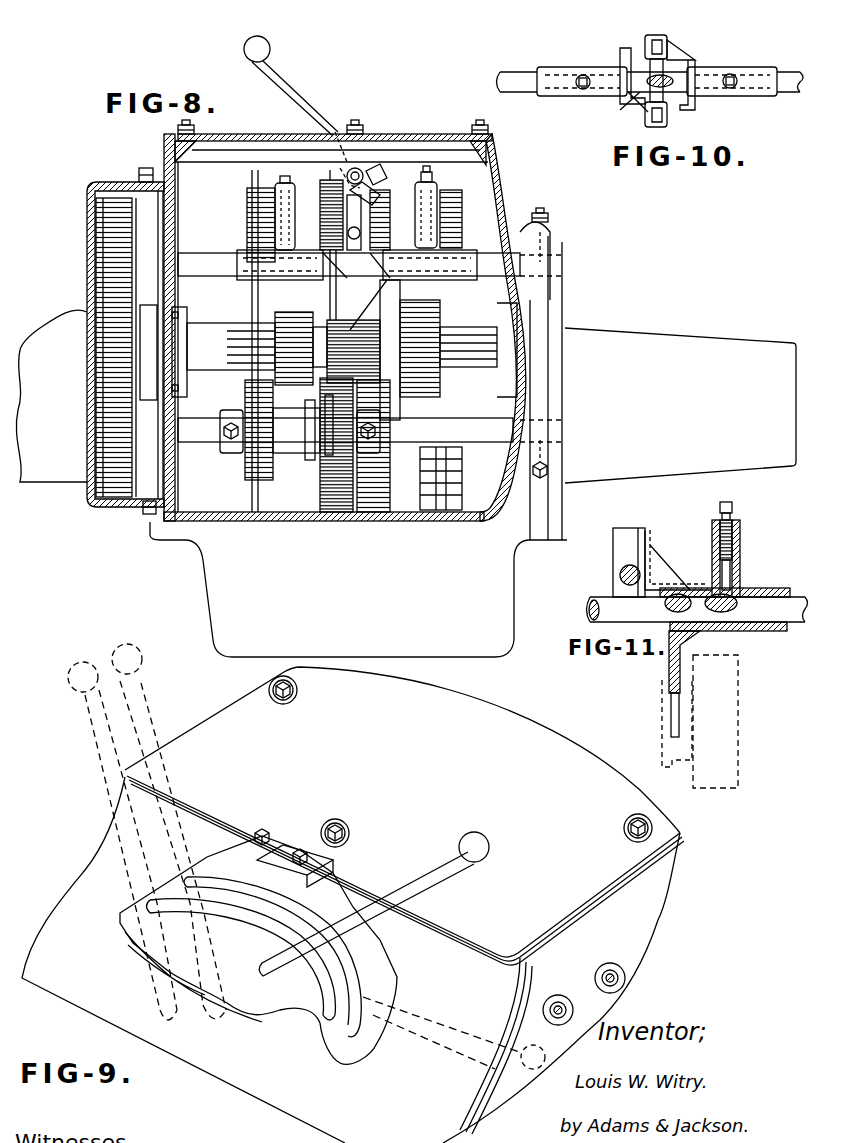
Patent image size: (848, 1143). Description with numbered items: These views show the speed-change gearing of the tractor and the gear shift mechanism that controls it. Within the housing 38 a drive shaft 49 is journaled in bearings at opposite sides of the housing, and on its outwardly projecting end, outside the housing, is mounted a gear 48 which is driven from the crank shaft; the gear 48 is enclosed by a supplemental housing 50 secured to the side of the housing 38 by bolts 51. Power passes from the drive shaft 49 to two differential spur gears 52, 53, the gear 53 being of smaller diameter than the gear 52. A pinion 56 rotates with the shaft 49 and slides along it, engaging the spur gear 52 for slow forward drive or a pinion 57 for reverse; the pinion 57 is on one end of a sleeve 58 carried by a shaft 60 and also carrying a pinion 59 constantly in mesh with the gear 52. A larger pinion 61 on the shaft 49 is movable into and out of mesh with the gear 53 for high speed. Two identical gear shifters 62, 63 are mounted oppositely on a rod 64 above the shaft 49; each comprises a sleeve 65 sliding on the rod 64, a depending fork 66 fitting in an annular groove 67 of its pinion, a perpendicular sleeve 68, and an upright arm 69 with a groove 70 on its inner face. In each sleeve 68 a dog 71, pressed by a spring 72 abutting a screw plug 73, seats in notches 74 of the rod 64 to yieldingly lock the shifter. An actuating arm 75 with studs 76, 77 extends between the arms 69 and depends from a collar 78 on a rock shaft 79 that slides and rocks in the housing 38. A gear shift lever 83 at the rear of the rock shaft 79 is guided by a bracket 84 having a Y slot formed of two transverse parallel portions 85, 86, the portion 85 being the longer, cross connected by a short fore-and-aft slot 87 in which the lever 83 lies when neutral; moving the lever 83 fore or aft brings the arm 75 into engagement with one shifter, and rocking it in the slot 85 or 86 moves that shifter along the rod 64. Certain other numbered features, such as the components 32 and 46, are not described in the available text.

In FIG. 8, the countershaft gears 32 is at (450, 237).
In FIG. 8, the housing 38 is at (176, 470).
In FIG. 9, the housing 38 is at (638, 930).
In FIG. 9, the cover plate 46 is at (500, 712).
In FIG. 8, the gear 48 is at (103, 268).
In FIG. 8, the drive shaft 49 is at (205, 358).
In FIG. 8, the supplemental housing 50 is at (88, 200).
In FIG. 8, the bolts 51 is at (141, 170).
In FIG. 8, the spur gear 52 is at (337, 490).
In FIG. 8, the spur gear 53 is at (377, 497).
In FIG. 8, the pinion 56 is at (293, 323).
In FIG. 8, the pinion 57 is at (252, 463).
In FIG. 8, the sleeve 58 is at (297, 440).
In FIG. 8, the pinion 59 is at (340, 452).
In FIG. 8, the shaft 60 is at (473, 430).
In FIG. 8, the pinion 61 is at (420, 327).
In FIG. 11, the pinion 61 is at (727, 720).
In FIG. 8, the gear shifter 62 is at (260, 265).
In FIG. 10, the gear shifter 62 is at (548, 96).
In FIG. 8, the gear shifter 63 is at (405, 253).
In FIG. 10, the gear shifter 63 is at (760, 70).
In FIG. 8, the rod 64 is at (197, 262).
In FIG. 10, the rod 64 is at (518, 72).
In FIG. 11, the rod 64 is at (603, 607).
In FIG. 11, the sleeve 65 is at (757, 631).
In FIG. 8, the fork 66 is at (427, 268).
In FIG. 11, the fork 66 is at (668, 680).
In FIG. 11, the annular groove 67 is at (680, 767).
In FIG. 8, the sleeve 68 is at (423, 207).
In FIG. 11, the sleeve 68 is at (742, 555).
In FIG. 10, the arm 69 is at (673, 48).
In FIG. 11, the arm 69 is at (648, 547).
In FIG. 10, the groove 70 is at (657, 42).
In FIG. 11, the groove 70 is at (630, 538).
In FIG. 11, the dog 71 is at (733, 580).
In FIG. 11, the spring 72 is at (741, 537).
In FIG. 8, the screw plug 73 is at (433, 183).
In FIG. 10, the screw plug 73 is at (583, 75).
In FIG. 11, the screw plug 73 is at (732, 505).
In FIG. 11, the notches 74 is at (685, 592).
In FIG. 8, the actuating arm 75 is at (340, 217).
In FIG. 10, the actuating arm 75 is at (672, 92).
In FIG. 10, the stud 76 is at (650, 53).
In FIG. 11, the stud 76 is at (622, 567).
In FIG. 10, the stud 77 is at (650, 113).
In FIG. 8, the collar 78 is at (347, 175).
In FIG. 8, the rock shaft 79 is at (380, 176).
In FIG. 8, the gear shift lever 83 is at (292, 93).
In FIG. 9, the gear shift lever 83 is at (443, 870).
In FIG. 9, the bracket 84 is at (317, 910).
In FIG. 9, the slot portion 85 is at (217, 880).
In FIG. 9, the slot portion 86 is at (250, 938).
In FIG. 9, the slot 87 is at (318, 950).